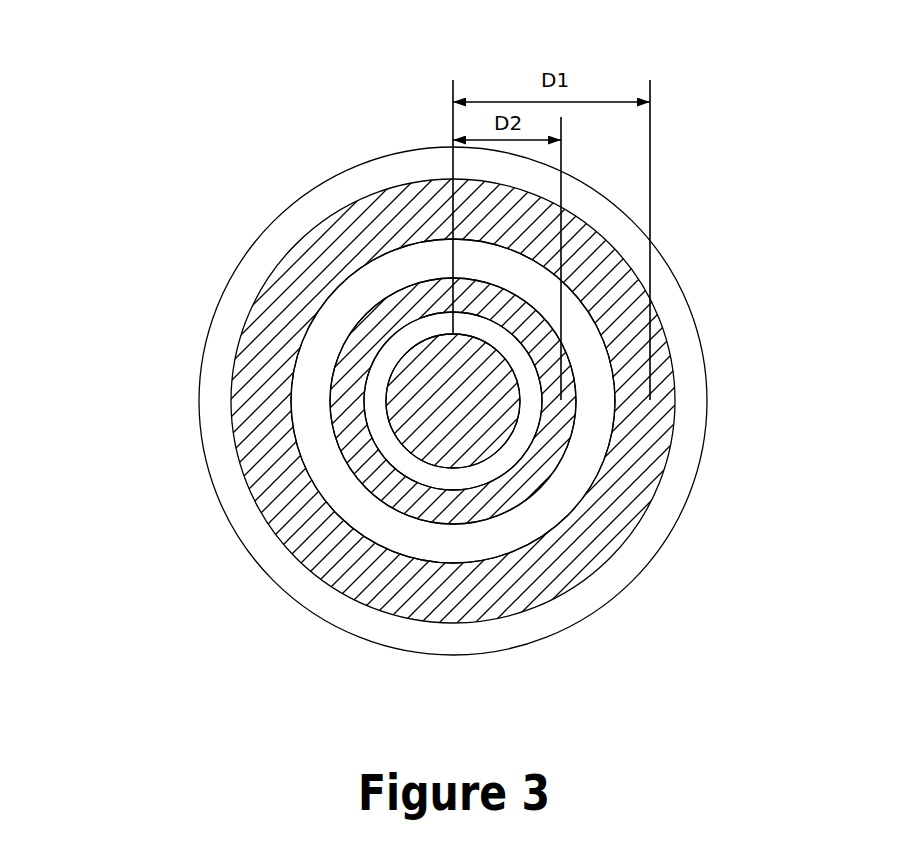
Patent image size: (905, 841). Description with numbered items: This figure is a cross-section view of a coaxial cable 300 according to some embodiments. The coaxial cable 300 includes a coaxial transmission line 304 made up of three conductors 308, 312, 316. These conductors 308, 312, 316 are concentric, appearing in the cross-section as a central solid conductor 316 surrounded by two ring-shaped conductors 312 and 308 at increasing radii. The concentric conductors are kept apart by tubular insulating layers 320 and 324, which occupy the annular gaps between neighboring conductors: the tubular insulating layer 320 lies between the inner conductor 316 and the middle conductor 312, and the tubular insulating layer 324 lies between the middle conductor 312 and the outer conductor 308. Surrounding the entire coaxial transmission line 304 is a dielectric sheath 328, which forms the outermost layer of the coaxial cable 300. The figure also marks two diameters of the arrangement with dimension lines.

The coaxial cable 300 is at (110, 33).
The coaxial transmission line 304 is at (265, 252).
The conductor 308 is at (675, 378).
The conductor 312 is at (353, 475).
The conductor 316 is at (455, 404).
The tubular insulating layer 320 is at (400, 478).
The tubular insulating layer 324 is at (287, 420).
The dielectric sheath 328 is at (217, 310).